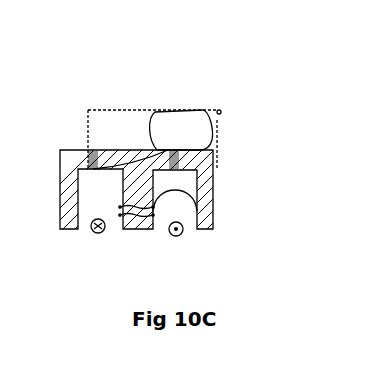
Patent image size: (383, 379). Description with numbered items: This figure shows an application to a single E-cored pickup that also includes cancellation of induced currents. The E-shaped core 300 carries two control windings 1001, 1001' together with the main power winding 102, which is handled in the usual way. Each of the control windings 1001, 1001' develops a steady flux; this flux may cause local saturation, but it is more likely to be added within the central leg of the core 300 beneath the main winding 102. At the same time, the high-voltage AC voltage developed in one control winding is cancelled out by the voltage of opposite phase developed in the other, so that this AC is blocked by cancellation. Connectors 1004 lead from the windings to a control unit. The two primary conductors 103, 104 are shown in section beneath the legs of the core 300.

The control winding 1001 is at (78, 116).
The control winding 1001' is at (154, 111).
The core 300 is at (211, 128).
The connectors 1004 is at (217, 121).
The main winding 102 is at (200, 213).
The primary conductor 103 is at (92, 241).
The primary conductor 104 is at (173, 236).